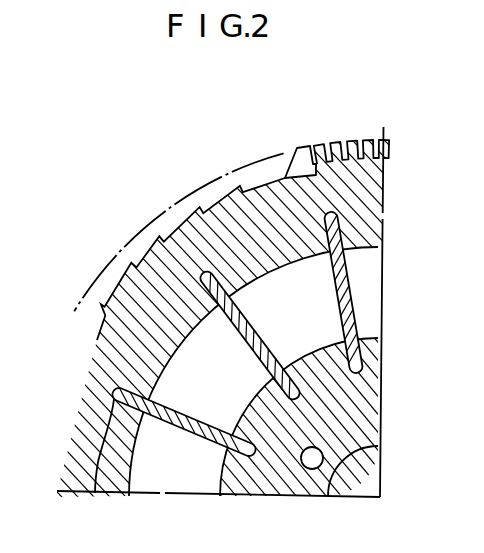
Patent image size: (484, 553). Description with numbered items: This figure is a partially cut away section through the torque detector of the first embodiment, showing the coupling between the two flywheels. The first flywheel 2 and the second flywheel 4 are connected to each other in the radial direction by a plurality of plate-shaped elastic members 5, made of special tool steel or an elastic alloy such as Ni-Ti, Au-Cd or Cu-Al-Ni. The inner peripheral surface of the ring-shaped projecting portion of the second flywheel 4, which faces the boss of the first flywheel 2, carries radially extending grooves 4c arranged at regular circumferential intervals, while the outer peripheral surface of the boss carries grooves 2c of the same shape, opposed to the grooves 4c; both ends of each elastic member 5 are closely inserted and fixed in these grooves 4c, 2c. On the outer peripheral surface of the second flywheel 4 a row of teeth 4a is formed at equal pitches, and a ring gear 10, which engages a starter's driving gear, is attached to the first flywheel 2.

The first flywheel 2 is at (298, 484).
The grooves 2c is at (247, 458).
The second flywheel 4 is at (105, 316).
The teeth 4a is at (294, 150).
The grooves 4c is at (95, 493).
The plate-shaped elastic members 5 is at (355, 278).
The ring gear 10 is at (207, 190).